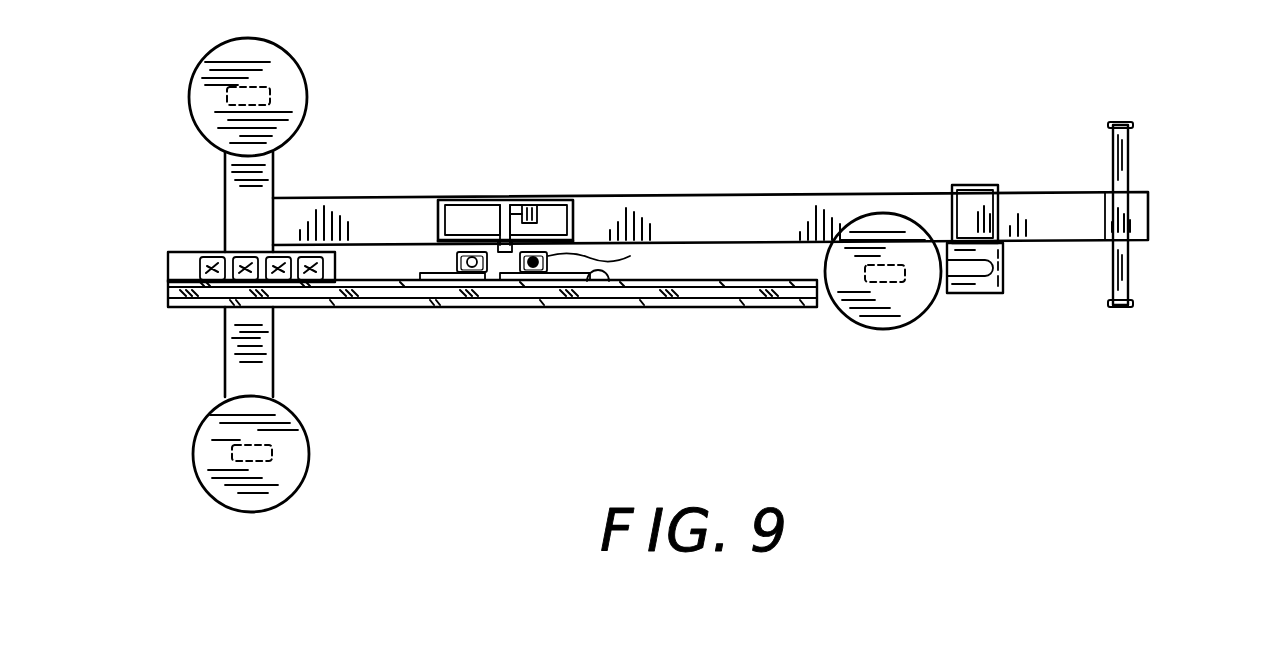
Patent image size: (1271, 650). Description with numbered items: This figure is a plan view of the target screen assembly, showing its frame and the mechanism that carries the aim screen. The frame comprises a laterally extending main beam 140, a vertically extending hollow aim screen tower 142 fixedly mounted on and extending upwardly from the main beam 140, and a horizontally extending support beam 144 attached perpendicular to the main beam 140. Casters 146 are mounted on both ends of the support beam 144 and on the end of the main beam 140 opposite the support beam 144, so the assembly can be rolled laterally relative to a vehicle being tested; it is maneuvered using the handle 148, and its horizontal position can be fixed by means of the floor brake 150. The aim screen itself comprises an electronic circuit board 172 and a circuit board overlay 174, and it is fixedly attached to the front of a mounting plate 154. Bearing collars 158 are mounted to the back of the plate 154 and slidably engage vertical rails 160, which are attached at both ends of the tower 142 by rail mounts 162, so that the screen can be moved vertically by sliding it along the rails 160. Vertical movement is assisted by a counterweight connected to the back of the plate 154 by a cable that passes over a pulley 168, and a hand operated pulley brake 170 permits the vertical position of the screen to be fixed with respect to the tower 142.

The main beam 140 is at (772, 198).
The aim screen tower 142 is at (510, 200).
The support beam 144 is at (224, 200).
The casters 146 is at (272, 101).
The handle 148 is at (1130, 150).
The floor brake 150 is at (972, 270).
The mounting plate 154 is at (582, 296).
The bearing collars 158 is at (548, 254).
The vertical rails 160 is at (552, 256).
The rail mounts 162 is at (456, 258).
The pulley 168 is at (516, 254).
The pulley brake 170 is at (520, 204).
The electronic circuit board 172 is at (420, 290).
The circuit board overlay 174 is at (496, 284).